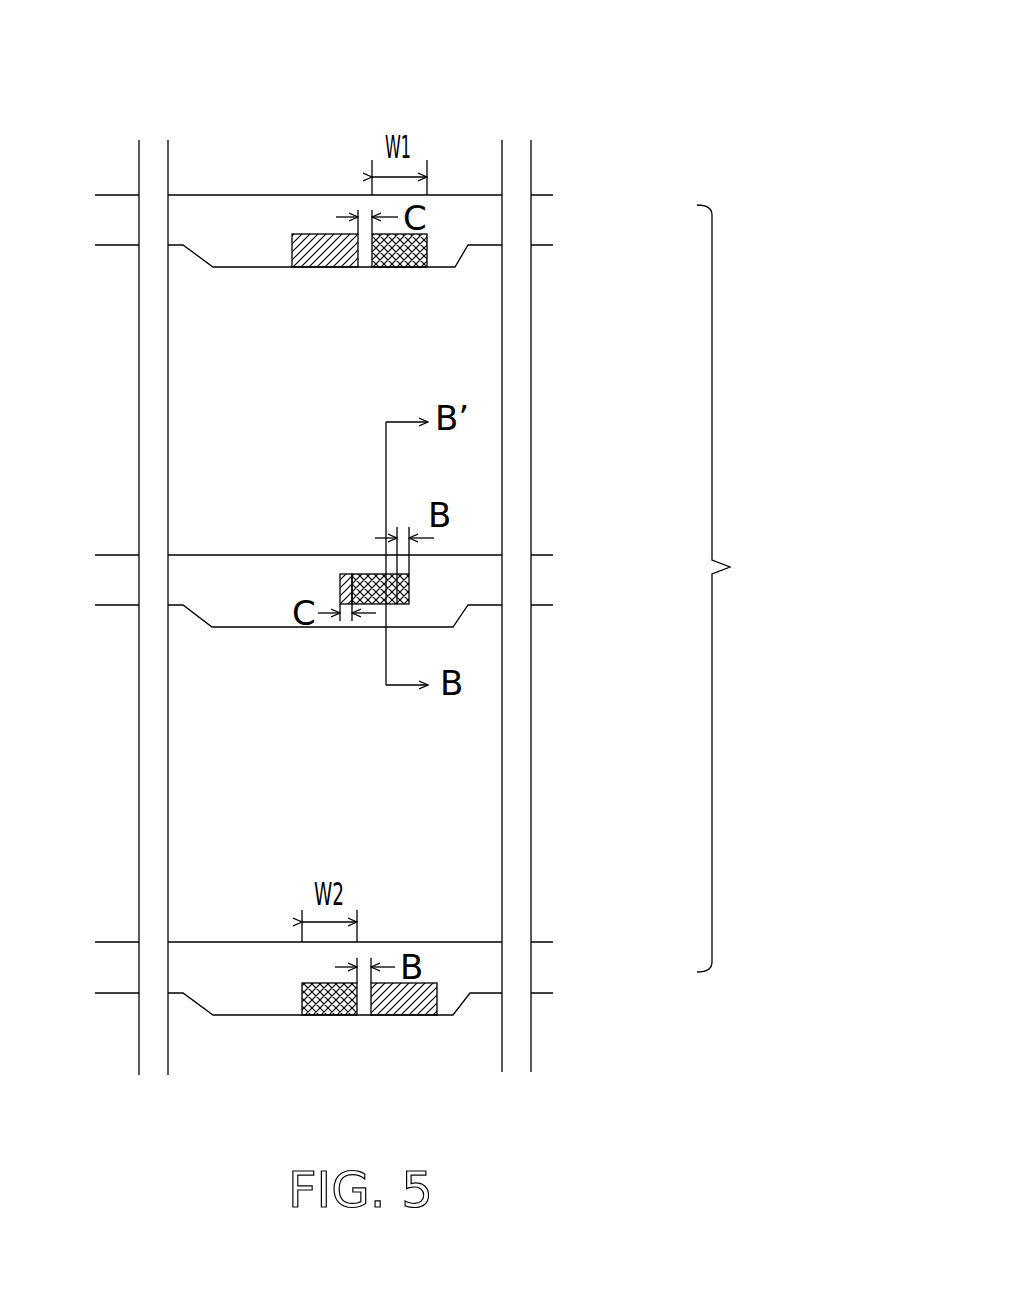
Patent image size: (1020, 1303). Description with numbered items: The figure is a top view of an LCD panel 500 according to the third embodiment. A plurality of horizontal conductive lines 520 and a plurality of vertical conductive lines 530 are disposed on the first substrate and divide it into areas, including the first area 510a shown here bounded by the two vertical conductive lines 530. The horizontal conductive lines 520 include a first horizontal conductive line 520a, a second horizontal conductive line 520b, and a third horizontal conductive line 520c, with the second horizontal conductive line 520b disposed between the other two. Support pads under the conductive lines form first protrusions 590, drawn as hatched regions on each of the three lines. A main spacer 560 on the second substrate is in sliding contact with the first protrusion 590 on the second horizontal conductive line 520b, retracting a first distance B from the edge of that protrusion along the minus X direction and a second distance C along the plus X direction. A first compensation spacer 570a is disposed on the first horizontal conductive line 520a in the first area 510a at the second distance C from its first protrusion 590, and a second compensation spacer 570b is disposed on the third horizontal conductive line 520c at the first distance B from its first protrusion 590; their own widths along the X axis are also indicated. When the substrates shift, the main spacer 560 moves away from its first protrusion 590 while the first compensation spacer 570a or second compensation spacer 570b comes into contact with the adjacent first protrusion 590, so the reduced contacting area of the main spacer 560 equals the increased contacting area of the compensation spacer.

The LCD panel 500 is at (703, 1143).
The first area 510a is at (337, 116).
The horizontal conductive lines 520 is at (748, 588).
The first horizontal conductive line 520a is at (545, 222).
The second horizontal conductive line 520b is at (545, 577).
The third horizontal conductive line 520c is at (545, 962).
The vertical conductive lines 530 is at (150, 150).
The main spacer 560 is at (372, 606).
The first compensation spacer 570a is at (427, 246).
The second compensation spacer 570b is at (330, 1016).
The first protrusions 590 is at (316, 268).